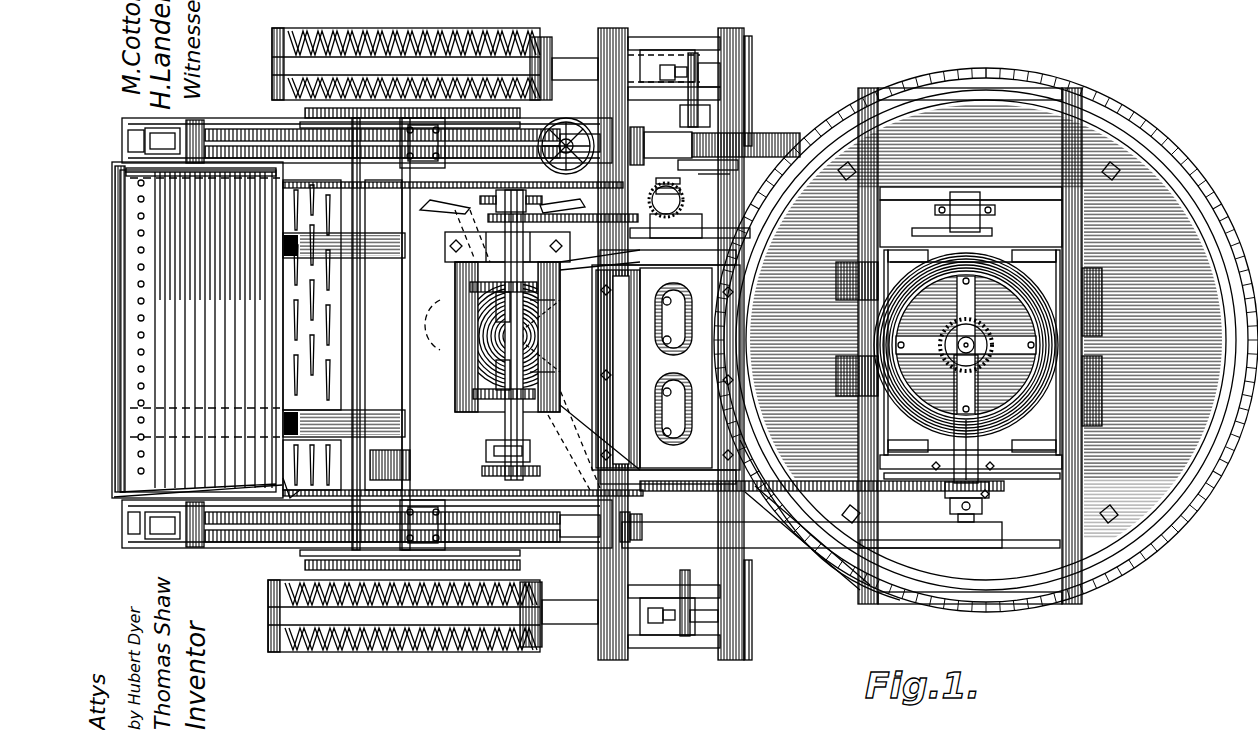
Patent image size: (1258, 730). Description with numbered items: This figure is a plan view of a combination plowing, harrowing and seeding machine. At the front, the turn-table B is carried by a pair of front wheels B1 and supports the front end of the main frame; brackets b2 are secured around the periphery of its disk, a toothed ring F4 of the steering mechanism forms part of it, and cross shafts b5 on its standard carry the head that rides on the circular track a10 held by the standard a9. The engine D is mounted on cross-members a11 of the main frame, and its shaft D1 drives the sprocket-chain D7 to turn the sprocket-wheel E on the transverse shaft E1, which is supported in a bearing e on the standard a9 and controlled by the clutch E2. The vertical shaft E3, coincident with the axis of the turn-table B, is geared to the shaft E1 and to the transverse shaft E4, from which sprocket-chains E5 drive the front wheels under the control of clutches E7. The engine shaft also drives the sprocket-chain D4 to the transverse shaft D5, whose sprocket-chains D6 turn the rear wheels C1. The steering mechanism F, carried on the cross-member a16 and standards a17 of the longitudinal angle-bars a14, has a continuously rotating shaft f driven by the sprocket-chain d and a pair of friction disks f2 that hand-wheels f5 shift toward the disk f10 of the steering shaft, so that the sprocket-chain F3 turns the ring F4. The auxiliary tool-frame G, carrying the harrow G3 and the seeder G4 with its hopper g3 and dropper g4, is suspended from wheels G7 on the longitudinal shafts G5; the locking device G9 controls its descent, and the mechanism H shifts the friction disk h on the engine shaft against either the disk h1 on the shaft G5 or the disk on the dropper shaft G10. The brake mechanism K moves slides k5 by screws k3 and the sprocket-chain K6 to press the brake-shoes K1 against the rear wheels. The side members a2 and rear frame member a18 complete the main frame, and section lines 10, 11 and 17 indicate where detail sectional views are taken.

The turn-table B is at (973, 340).
The standard a9 is at (1050, 85).
The brackets b2 is at (845, 162).
The cross shafts b5 is at (880, 222).
The transverse shaft E4 is at (961, 212).
The clutches E7 is at (992, 234).
The sprocket-chains E5 is at (1062, 256).
The front wheels B1 is at (884, 256).
The circle a10 is at (1068, 258).
The sprocket-wheel E is at (990, 492).
The vertical shaft E3 is at (960, 355).
The bearing e is at (956, 440).
The clutch E2 is at (984, 512).
The transverse shaft E1 is at (982, 448).
The sprocket-chain D7 is at (838, 480).
The toothed ring F4 is at (1178, 520).
The sprocket-chain F3 is at (760, 520).
The engine shaft D1 is at (812, 534).
The cross-members a11 is at (612, 640).
The rear wheels C1 is at (520, 34).
The brake-shoes K1 is at (548, 48).
The brake mechanism K is at (745, 660).
The slides k5 is at (648, 60).
The screws k3 is at (668, 66).
The sprocket-chain K6 is at (720, 75).
The gripping or locking device G9 is at (574, 120).
The friction disk h1 is at (652, 132).
The section line 11 is at (670, 185).
The shiftable friction disk h is at (700, 170).
The power-transmitting mechanism H is at (739, 164).
The section line 17 is at (690, 233).
The longitudinal shafts G5 is at (276, 140).
The wheels G7 is at (195, 548).
The seeder G4 is at (126, 170).
The dropper actuating shaft G10 is at (428, 334).
The sprocket-chains D6 is at (522, 562).
The sprocket-chain D4 is at (578, 500).
The section line 10 is at (505, 182).
The dropper g4 is at (140, 232).
The rear frame member a18 is at (126, 540).
The side members a2 is at (152, 545).
The harrow G3 is at (328, 362).
The longitudinal angle-bars a14 is at (380, 258).
The transverse shaft D5 is at (400, 322).
The auxiliary tool-frame G is at (284, 480).
The hopper g3 is at (300, 500).
The steering mechanism F is at (455, 378).
The cross-member a16 is at (492, 336).
The continuously rotating shaft f is at (545, 320).
The friction disks f2 is at (470, 288).
The friction disk f10 is at (548, 312).
The hand-wheels f5 is at (530, 195).
The standards a17 is at (468, 425).
The sprocket-chain d is at (562, 220).
The engine D is at (644, 370).